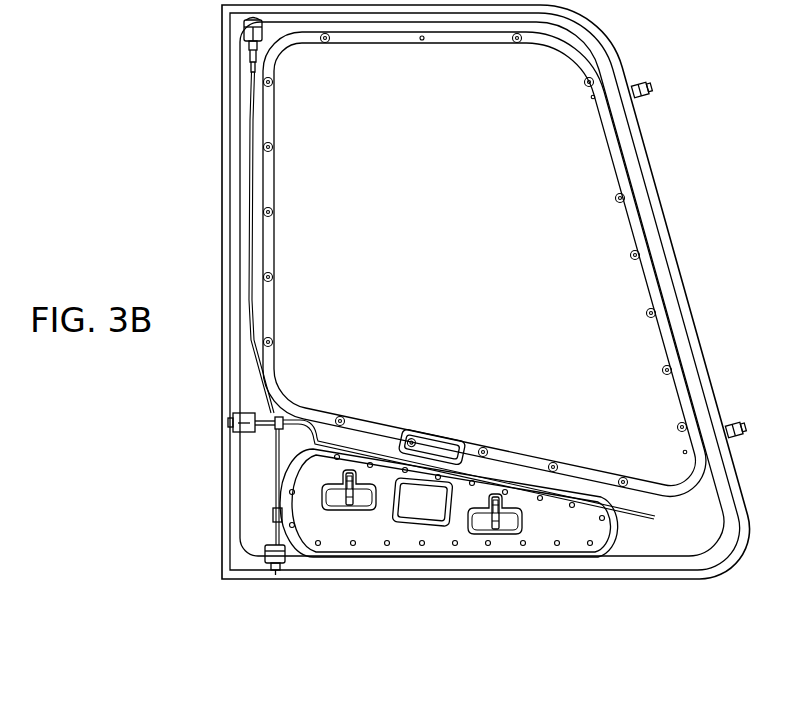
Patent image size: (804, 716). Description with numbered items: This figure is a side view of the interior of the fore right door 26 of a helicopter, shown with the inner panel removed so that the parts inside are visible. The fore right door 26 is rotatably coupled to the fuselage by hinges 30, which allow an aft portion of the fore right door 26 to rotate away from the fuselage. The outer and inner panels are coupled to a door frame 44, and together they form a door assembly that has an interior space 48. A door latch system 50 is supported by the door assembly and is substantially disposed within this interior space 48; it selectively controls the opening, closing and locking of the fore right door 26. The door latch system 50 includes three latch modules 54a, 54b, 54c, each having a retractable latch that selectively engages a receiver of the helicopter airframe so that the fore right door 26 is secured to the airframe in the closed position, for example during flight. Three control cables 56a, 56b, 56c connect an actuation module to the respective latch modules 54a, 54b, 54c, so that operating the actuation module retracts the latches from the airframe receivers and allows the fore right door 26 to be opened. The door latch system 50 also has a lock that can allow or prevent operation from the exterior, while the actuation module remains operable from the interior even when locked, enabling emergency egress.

The fore right door 26 is at (668, 298).
The hinges 30 is at (652, 92).
The door frame 44 is at (650, 233).
The interior space 48 is at (707, 507).
The door latch system 50 is at (500, 528).
The latch module 54a is at (264, 562).
The latch module 54b is at (233, 424).
The latch module 54c is at (243, 30).
The control cable 56a is at (275, 498).
The control cable 56b is at (306, 420).
The control cable 56c is at (246, 198).